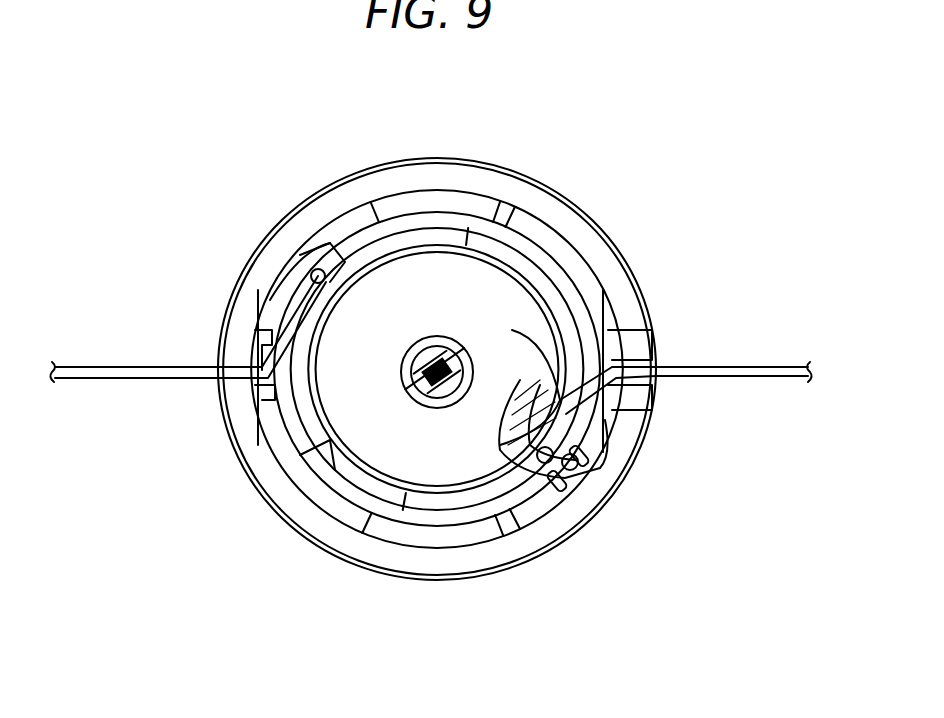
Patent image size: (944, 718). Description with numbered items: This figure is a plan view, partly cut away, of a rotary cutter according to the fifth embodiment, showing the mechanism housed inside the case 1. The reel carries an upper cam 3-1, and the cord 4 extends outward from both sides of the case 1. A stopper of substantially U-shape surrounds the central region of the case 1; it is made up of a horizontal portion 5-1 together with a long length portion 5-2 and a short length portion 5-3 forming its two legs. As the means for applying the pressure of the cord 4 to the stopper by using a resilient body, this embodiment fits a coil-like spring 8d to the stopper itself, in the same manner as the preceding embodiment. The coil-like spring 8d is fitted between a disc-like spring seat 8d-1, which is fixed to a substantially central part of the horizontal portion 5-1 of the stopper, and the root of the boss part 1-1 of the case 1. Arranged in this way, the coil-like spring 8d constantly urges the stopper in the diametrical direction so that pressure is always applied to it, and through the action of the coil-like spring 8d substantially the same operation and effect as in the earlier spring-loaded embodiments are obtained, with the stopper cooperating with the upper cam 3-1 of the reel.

The case 1 is at (525, 174).
The boss part 1-1 is at (405, 393).
The upper cam 3-1 is at (362, 247).
The cord 4 is at (150, 367).
The horizontal portion 5-1 is at (440, 400).
The long length portion 5-2 is at (318, 273).
The short length portion 5-3 is at (530, 470).
The coil-like spring 8d is at (425, 343).
The disc-like spring seat 8d-1 is at (472, 373).